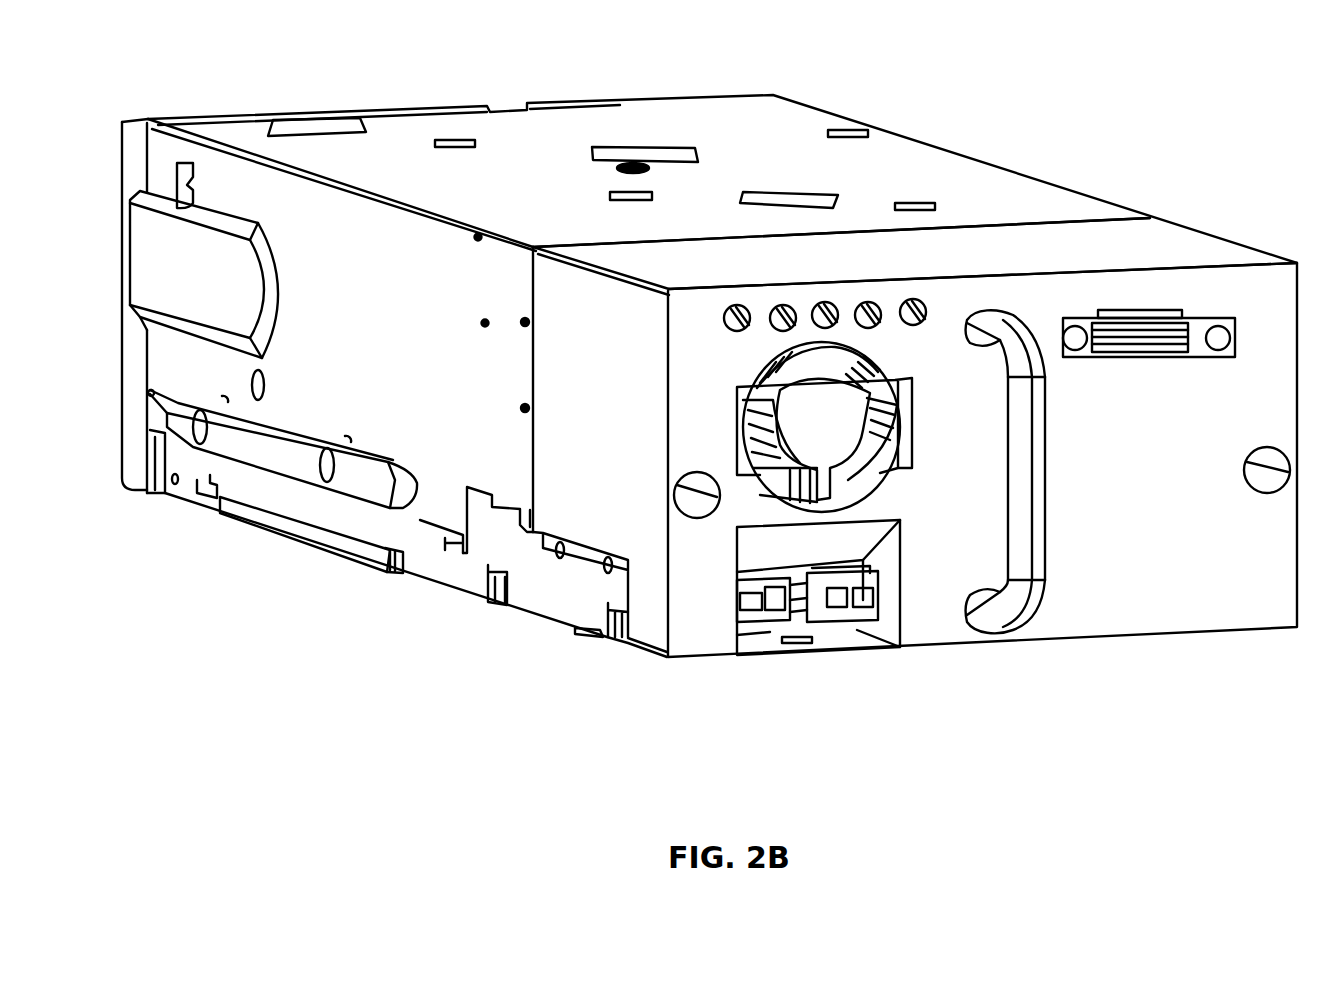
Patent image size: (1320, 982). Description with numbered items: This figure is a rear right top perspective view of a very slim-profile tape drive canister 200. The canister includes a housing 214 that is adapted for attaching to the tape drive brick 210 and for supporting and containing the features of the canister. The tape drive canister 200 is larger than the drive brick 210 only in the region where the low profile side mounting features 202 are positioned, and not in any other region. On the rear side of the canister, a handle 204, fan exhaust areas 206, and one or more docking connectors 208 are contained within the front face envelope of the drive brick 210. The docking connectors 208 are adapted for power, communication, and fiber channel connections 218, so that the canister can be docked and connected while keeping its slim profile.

The tape drive canister 200 is at (1022, 98).
The low profile side mounting features 202 is at (285, 455).
The handle 204 is at (1047, 542).
The fan exhaust areas 206 is at (895, 476).
The docking connectors 208 is at (1215, 317).
The drive brick 210 is at (383, 153).
The housing 214 is at (1133, 240).
The fiber channel connections 218 is at (771, 637).